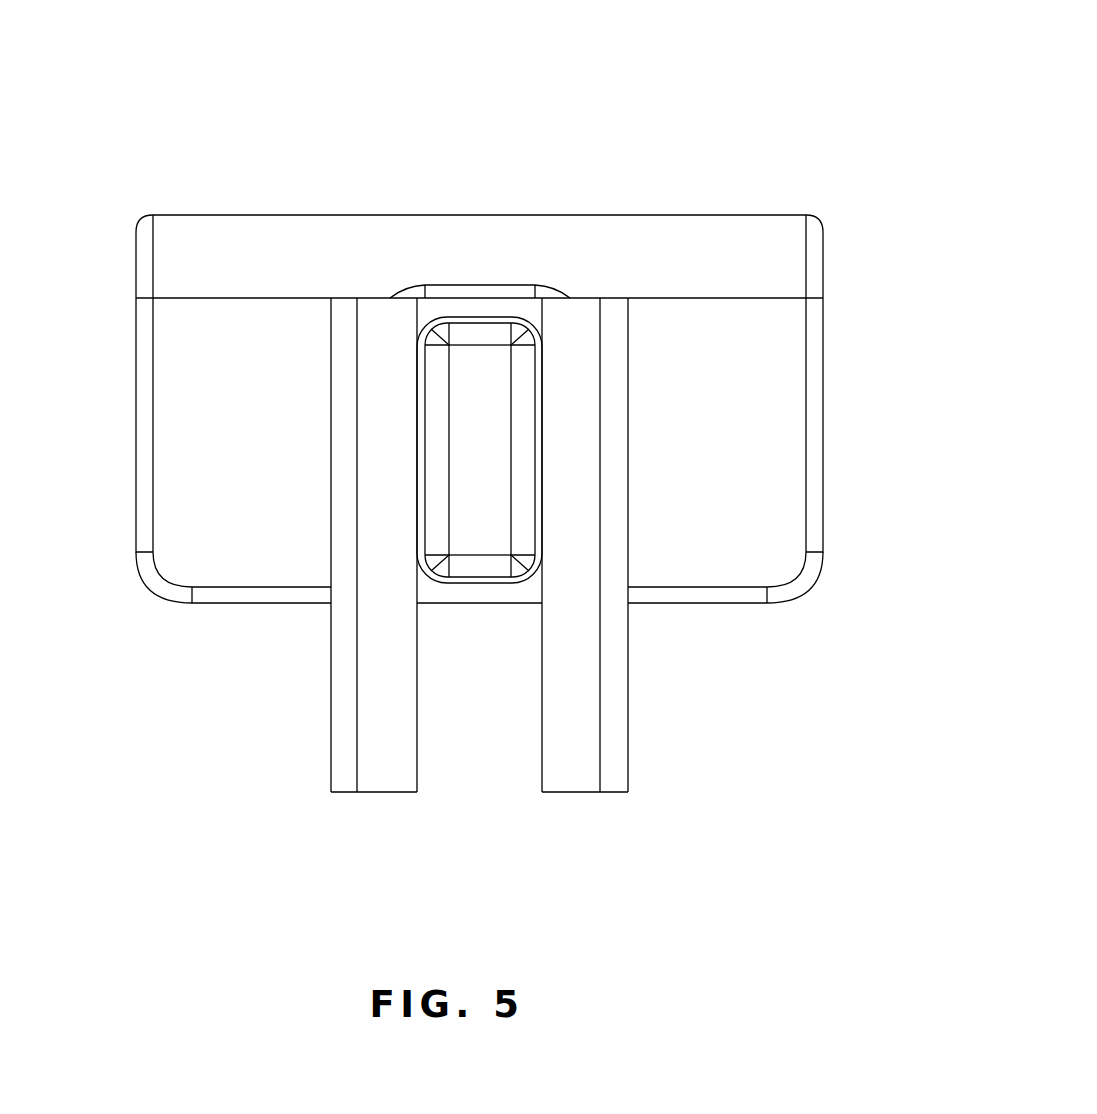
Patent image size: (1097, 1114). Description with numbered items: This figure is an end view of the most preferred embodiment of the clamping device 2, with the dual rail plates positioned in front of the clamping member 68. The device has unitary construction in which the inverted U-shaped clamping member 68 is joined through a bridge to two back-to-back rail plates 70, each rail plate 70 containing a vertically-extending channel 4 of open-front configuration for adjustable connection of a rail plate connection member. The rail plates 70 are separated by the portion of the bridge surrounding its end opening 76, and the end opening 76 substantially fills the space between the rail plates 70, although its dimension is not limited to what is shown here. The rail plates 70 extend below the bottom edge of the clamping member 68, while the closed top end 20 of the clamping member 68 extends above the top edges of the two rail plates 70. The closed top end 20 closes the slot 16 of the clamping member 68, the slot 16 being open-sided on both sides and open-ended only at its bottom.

The clamping device 2 is at (740, 58).
The closed top end 20 is at (535, 207).
The slot 16 is at (120, 480).
The clamping member 68 is at (787, 353).
The vertically-extending channel 4 is at (314, 676).
The rail plate 70 is at (378, 778).
The end opening 76 is at (482, 540).